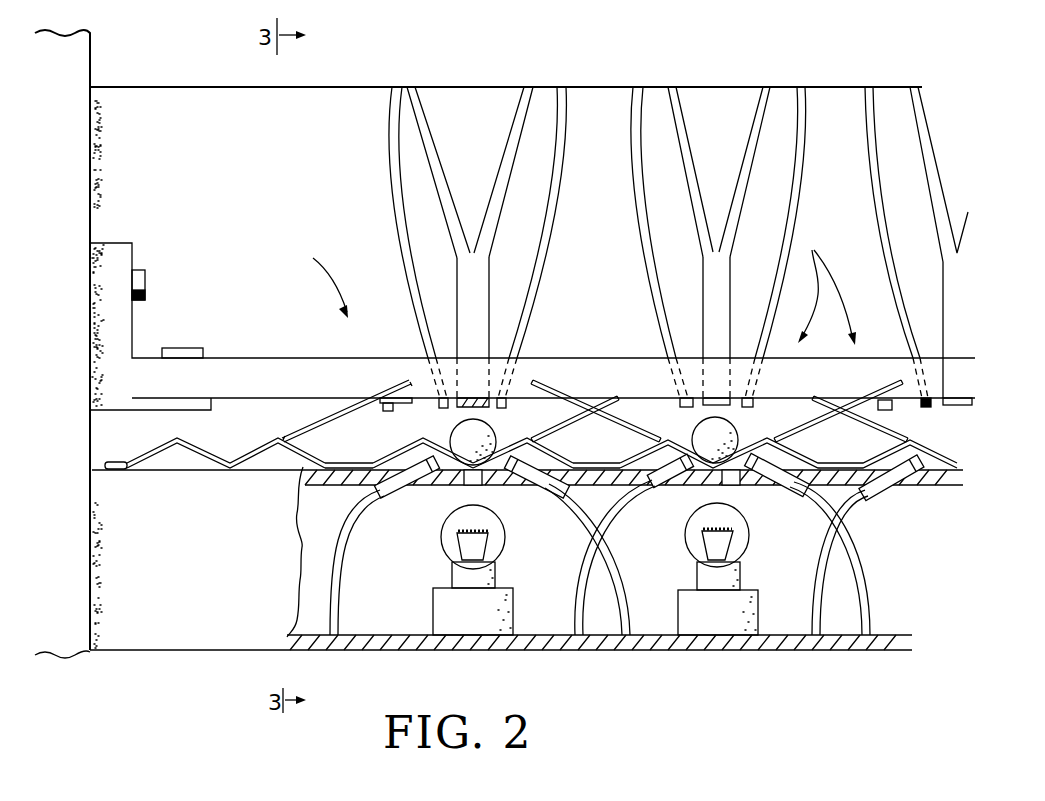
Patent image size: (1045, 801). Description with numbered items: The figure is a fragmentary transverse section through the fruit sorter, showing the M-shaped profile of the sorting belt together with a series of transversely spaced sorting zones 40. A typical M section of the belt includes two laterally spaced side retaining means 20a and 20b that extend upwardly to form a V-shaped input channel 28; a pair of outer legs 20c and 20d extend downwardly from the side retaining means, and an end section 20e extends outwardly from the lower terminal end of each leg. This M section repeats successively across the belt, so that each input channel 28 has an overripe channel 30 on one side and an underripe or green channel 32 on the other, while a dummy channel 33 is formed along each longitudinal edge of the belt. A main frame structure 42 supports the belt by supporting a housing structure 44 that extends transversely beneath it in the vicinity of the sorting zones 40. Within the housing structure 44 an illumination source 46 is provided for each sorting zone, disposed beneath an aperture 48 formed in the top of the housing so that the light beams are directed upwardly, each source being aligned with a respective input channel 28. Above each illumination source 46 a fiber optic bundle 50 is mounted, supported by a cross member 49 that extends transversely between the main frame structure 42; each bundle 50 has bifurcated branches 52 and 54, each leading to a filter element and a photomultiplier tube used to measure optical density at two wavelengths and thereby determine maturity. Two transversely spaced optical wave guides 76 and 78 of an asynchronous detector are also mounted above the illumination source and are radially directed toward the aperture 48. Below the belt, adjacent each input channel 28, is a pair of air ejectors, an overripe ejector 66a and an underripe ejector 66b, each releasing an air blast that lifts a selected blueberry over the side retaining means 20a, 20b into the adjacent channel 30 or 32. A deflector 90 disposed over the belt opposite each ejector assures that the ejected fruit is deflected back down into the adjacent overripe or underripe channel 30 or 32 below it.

The main frame structure 42 is at (85, 78).
The cross member 49 is at (227, 363).
The optical wave guide 76 is at (402, 246).
The optical wave guide 78 is at (550, 222).
The bifurcated branch 54 is at (428, 110).
The bifurcated branch 52 is at (673, 143).
The fiber optic bundle 50 is at (710, 295).
The sorting zone 40 is at (567, 291).
The deflector 90 is at (302, 427).
The dummy channel 33 is at (207, 470).
The side retaining means 20a is at (512, 452).
The side retaining means 20b is at (380, 490).
The outer leg 20c is at (407, 463).
The outer leg 20d is at (568, 465).
The end section 20e is at (355, 470).
The input channel 28 is at (468, 472).
The overripe channel 30 is at (300, 510).
The underripe channel 32 is at (688, 487).
The overripe ejector 66a is at (545, 497).
The underripe ejector 66b is at (403, 490).
The aperture 48 is at (787, 550).
The illumination source 46 is at (697, 617).
The housing structure 44 is at (230, 622).